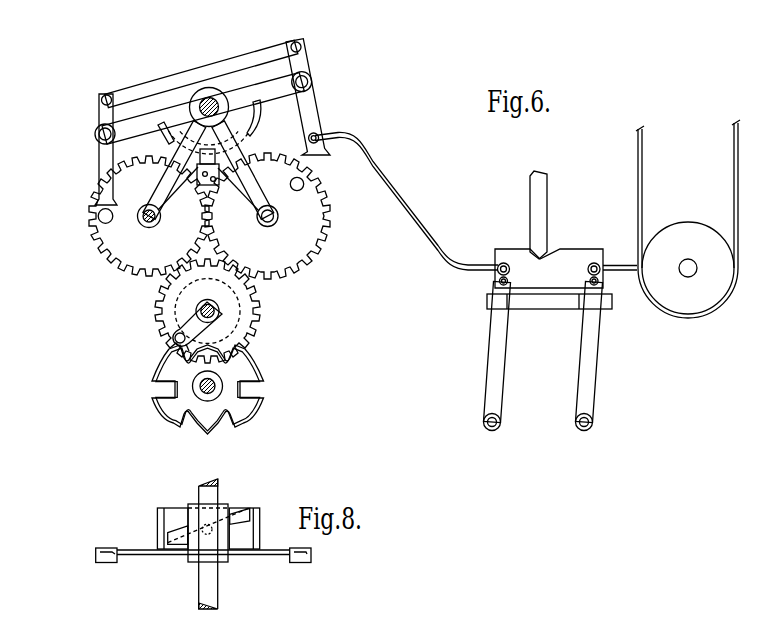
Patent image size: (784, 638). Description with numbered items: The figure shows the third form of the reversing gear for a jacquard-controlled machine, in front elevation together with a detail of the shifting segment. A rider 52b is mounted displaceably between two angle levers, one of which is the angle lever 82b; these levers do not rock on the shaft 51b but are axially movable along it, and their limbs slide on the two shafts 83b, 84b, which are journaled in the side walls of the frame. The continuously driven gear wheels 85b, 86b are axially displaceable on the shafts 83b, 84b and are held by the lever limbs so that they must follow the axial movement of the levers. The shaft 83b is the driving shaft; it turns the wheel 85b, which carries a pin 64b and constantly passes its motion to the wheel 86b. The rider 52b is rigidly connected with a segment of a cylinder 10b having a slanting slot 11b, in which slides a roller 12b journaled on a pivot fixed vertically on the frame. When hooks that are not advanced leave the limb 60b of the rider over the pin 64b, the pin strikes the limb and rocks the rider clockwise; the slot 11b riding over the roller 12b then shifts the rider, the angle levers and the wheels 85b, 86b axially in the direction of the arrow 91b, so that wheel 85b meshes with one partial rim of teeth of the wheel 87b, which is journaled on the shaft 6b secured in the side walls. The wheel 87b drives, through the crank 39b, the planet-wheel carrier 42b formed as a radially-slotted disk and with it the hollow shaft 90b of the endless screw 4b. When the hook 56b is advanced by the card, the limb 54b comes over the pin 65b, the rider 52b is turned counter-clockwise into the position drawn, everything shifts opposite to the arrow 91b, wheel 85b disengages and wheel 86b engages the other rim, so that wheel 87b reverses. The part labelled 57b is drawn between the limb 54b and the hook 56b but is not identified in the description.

In FIG. 6, the shaft 51b is at (201, 80).
In FIG. 8, the shaft 51b is at (210, 579).
In FIG. 6, the rider 52b is at (203, 92).
In FIG. 6, the segment of a cylinder 10b is at (251, 102).
In FIG. 8, the segment of a cylinder 10b is at (249, 506).
In FIG. 6, the limb 54b is at (302, 101).
In FIG. 6, the roller 12b is at (217, 155).
In FIG. 8, the roller 12b is at (194, 516).
In FIG. 6, the angle lever 82b is at (242, 134).
In FIG. 6, the limb 60b is at (95, 157).
In FIG. 6, the pin 64b is at (113, 227).
In FIG. 6, the driving shaft 83b is at (164, 224).
In FIG. 6, the pin 65b is at (297, 198).
In FIG. 6, the shaft 84b is at (273, 229).
In FIG. 6, the gear wheel 86b is at (307, 239).
In FIG. 6, the gear wheel 85b is at (149, 226).
In FIG. 6, the wheel 87b is at (250, 300).
In FIG. 6, the shaft 6b is at (218, 312).
In FIG. 6, the crank 39b is at (164, 326).
In FIG. 6, the planet-wheel carrier 42b is at (234, 360).
In FIG. 6, the endless screw 4b is at (200, 393).
In FIG. 6, the hollow shaft 90b is at (212, 380).
In FIG. 6, the rod 57b is at (411, 226).
In FIG. 6, the hook 56b is at (561, 301).
In FIG. 8, the arrow 91b is at (114, 525).
In FIG. 8, the slanting slot 11b is at (233, 506).